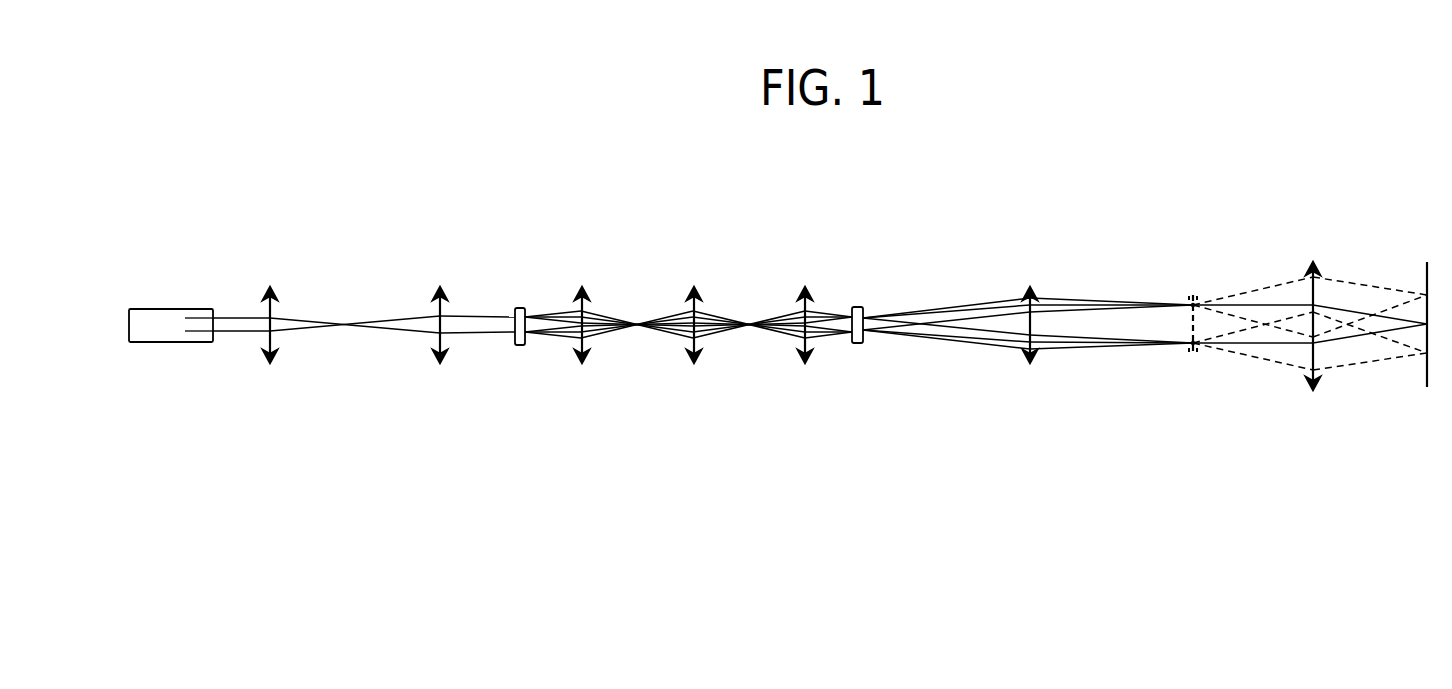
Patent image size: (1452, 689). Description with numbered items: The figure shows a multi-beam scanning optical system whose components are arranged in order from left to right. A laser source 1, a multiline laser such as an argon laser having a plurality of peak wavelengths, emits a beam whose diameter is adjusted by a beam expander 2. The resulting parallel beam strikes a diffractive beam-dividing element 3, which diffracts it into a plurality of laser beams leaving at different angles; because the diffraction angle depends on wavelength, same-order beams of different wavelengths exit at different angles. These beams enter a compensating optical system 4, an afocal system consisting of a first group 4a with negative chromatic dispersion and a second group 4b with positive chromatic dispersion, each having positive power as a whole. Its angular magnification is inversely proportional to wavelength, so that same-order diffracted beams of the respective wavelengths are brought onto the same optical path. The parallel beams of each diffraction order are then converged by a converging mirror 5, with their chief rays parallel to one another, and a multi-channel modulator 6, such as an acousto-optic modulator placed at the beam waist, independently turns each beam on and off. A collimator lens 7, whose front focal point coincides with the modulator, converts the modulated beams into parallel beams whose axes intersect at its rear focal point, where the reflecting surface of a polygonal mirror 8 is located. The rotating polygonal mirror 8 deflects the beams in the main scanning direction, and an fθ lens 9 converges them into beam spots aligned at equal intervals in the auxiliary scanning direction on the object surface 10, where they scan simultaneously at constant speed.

The laser source 1 is at (172, 307).
The beam expander 2 is at (257, 272).
The diffractive beam-dividing element 3 is at (520, 306).
The compensating optical system 4 is at (563, 200).
The first group 4a is at (582, 284).
The second group 4b is at (694, 284).
The converging mirror 5 is at (805, 284).
The multi-channel modulator 6 is at (857, 305).
The collimator lens 7 is at (1030, 282).
The polygonal mirror 8 is at (1193, 292).
The fθ lens 9 is at (1313, 258).
The object surface 10 is at (1427, 258).